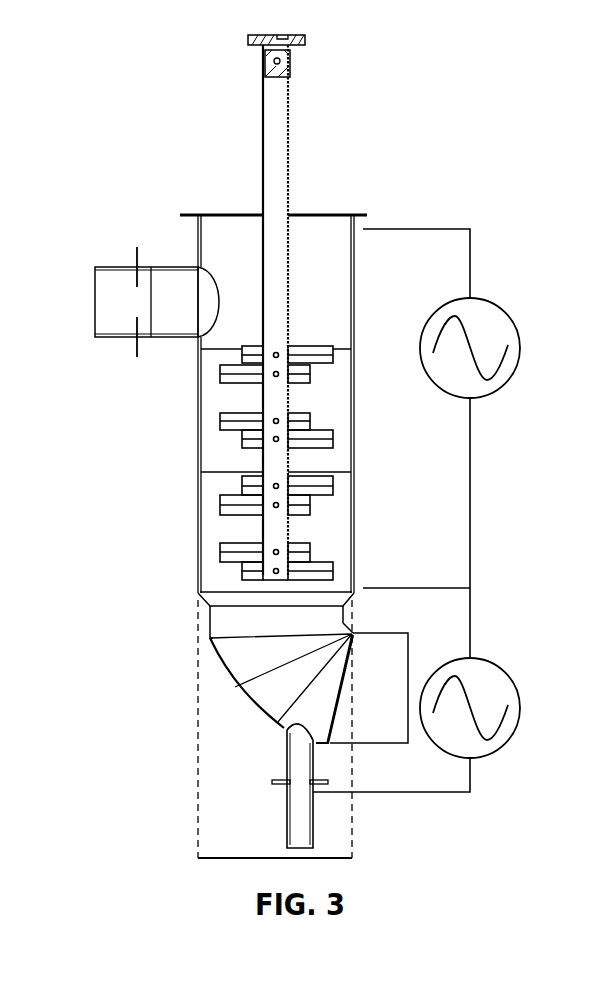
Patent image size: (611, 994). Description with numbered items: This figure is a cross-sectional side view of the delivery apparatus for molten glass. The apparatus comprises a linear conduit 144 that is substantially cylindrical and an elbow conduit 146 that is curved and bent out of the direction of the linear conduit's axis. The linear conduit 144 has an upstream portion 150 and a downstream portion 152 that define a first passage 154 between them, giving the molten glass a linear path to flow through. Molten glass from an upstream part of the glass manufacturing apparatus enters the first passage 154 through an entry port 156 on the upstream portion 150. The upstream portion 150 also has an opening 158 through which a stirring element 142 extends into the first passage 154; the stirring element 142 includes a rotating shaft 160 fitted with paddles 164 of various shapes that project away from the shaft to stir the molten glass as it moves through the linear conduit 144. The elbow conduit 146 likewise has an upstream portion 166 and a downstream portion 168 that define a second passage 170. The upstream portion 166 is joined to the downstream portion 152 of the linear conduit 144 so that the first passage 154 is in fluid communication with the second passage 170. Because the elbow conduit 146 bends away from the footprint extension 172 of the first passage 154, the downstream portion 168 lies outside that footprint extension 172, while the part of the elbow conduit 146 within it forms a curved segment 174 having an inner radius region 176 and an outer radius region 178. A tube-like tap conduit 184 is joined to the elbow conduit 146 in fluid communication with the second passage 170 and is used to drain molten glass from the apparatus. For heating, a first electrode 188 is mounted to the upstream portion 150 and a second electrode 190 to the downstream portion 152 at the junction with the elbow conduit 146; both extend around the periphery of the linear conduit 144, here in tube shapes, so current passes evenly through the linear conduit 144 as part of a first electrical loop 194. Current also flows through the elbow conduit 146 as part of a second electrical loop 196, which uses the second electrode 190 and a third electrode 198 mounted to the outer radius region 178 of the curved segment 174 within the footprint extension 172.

The stirring element 142 is at (322, 95).
The linear conduit 144 is at (198, 452).
The elbow conduit 146 is at (250, 707).
The upstream portion 150 is at (274, 393).
The downstream portion 152 is at (382, 580).
The first passage 154 is at (345, 282).
The entry port 156 is at (90, 312).
The opening 158 is at (295, 310).
The rotating shaft 160 is at (262, 205).
The paddles 164 is at (322, 347).
The upstream portion 166 is at (315, 684).
The downstream portion 168 is at (390, 760).
The second passage 170 is at (403, 692).
The footprint extension 172 is at (228, 858).
The curved segment 174 is at (240, 735).
The inner radius region 176 is at (352, 633).
The outer radius region 178 is at (215, 650).
The tap conduit 184 is at (196, 789).
The third electrode 198 is at (287, 805).
The first electrode 188 is at (368, 215).
The second electrode 190 is at (199, 600).
The first electrical loop 194 is at (472, 440).
The second electrical loop 196 is at (472, 628).